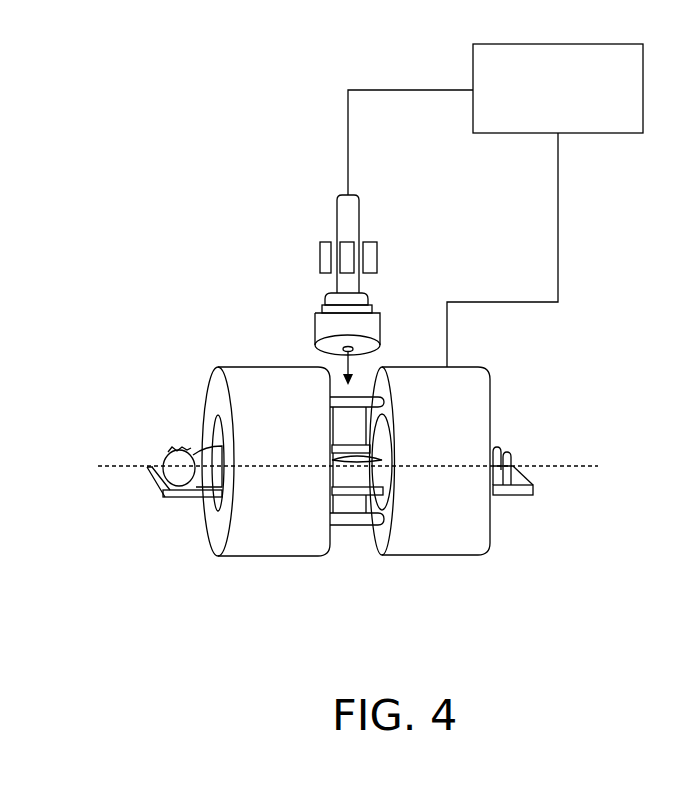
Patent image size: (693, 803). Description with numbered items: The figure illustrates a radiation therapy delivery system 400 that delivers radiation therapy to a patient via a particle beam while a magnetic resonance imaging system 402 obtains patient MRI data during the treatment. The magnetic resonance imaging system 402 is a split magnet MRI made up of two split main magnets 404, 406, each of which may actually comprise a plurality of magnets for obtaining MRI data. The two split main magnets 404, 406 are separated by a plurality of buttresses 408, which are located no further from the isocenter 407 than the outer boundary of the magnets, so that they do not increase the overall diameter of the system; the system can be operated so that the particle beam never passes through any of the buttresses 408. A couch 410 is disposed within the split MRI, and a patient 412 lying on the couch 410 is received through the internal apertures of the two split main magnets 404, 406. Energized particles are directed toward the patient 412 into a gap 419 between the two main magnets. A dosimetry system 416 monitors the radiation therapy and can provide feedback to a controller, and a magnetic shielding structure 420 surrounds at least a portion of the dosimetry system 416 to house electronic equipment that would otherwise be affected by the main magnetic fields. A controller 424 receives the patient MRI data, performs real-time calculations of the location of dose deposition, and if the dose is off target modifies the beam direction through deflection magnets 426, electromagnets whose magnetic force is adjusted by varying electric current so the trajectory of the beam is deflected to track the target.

The radiation therapy delivery system 400 is at (139, 82).
The magnetic resonance imaging system 402 is at (357, 465).
The split main magnet 404 is at (218, 538).
The split main magnet 406 is at (435, 557).
The isocenter 407 is at (580, 466).
The buttresses 408 is at (386, 383).
The couch 410 is at (163, 500).
The patient 412 is at (170, 455).
The dosimetry system 416 is at (360, 289).
The gap 419 is at (334, 376).
The magnetic shielding structure 420 is at (328, 328).
The controller 424 is at (543, 114).
The deflection magnets 426 is at (328, 260).